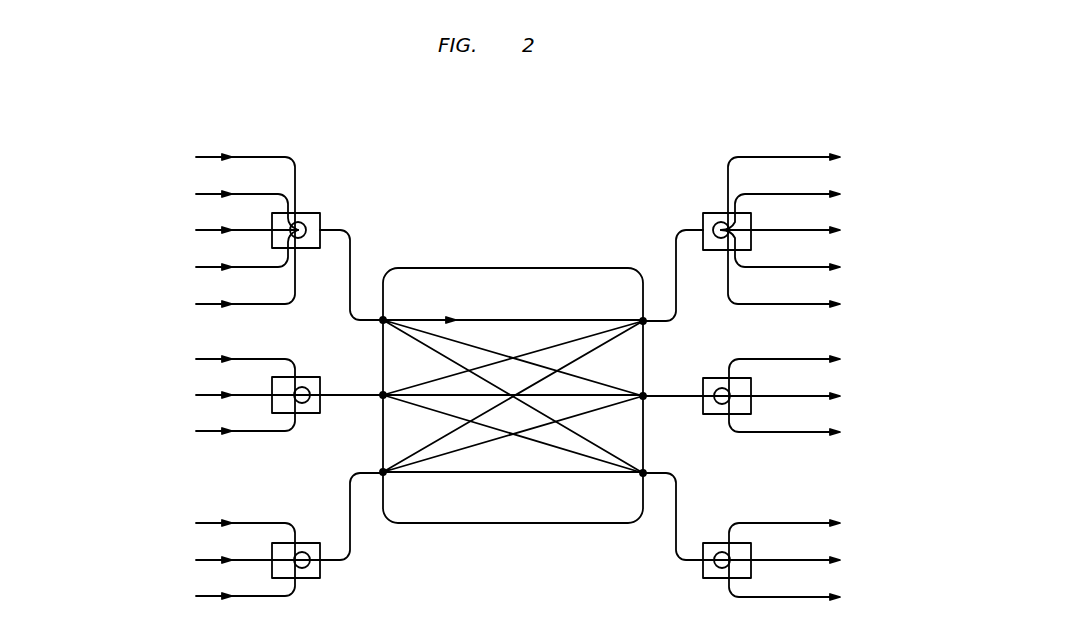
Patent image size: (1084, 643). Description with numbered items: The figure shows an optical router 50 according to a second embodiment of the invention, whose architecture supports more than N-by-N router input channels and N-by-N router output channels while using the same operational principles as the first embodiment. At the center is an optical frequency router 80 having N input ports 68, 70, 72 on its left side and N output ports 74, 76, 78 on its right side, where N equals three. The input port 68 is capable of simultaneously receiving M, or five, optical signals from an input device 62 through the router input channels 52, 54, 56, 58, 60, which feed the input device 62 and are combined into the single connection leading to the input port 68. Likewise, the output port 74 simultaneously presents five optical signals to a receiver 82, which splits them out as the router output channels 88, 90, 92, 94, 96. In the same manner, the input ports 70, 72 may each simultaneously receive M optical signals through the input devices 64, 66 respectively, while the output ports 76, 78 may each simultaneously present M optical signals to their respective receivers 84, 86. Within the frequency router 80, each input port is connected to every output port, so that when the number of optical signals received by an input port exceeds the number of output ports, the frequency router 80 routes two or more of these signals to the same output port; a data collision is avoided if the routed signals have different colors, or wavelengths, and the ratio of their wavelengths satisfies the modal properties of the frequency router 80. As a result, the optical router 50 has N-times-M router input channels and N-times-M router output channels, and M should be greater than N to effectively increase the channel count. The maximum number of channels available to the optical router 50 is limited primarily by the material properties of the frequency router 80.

The optical router 50 is at (643, 157).
The router input channel 52 is at (196, 157).
The router input channel 54 is at (196, 194).
The router input channel 56 is at (196, 230).
The router input channel 58 is at (196, 267).
The router input channel 60 is at (196, 304).
The input device 62 is at (308, 248).
The input device 64 is at (308, 413).
The input device 66 is at (308, 578).
The input port 68 is at (381, 322).
The input port 70 is at (381, 393).
The input port 72 is at (381, 470).
The output port 74 is at (645, 323).
The output port 76 is at (645, 394).
The output port 78 is at (645, 471).
The optical frequency router 80 is at (524, 510).
The receiver 82 is at (715, 250).
The receiver 84 is at (715, 414).
The receiver 86 is at (715, 578).
The router output channel 88 is at (782, 157).
The router output channel 90 is at (782, 194).
The router output channel 92 is at (782, 230).
The router output channel 94 is at (782, 267).
The router output channel 96 is at (782, 304).